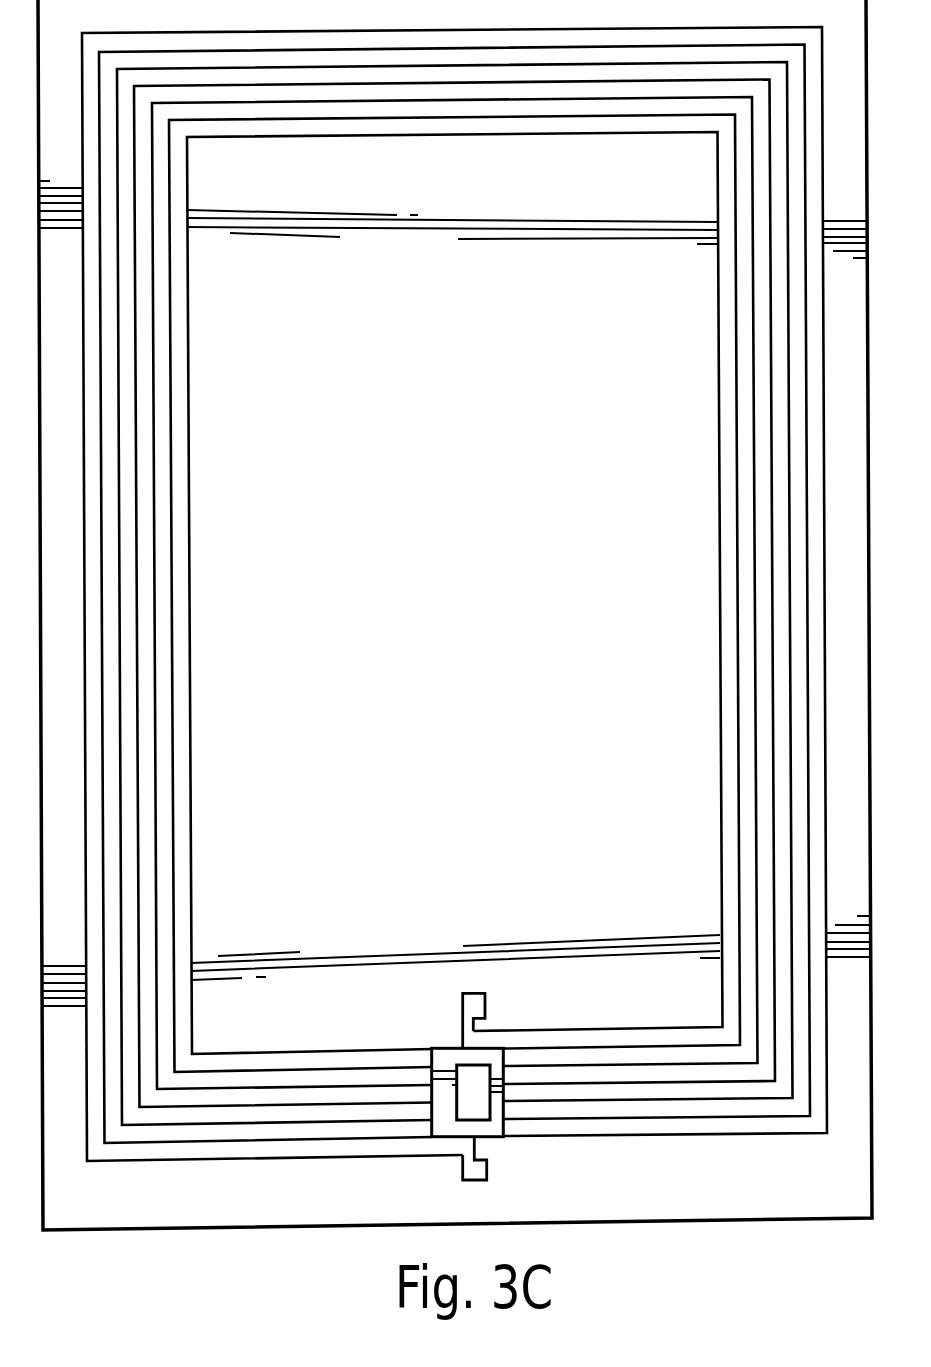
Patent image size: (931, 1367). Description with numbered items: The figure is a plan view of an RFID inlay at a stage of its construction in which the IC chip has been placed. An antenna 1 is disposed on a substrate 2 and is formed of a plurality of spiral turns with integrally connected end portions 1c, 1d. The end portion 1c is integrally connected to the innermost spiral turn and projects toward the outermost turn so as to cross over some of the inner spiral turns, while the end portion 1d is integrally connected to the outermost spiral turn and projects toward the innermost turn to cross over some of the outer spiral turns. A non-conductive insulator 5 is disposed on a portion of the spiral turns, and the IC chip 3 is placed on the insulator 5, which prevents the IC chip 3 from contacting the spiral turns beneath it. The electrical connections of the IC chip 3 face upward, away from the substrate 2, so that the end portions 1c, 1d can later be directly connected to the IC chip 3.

The antenna 1 is at (180, 380).
The end portion 1c is at (470, 1022).
The end portion 1d is at (474, 1177).
The substrate 2 is at (75, 1208).
The IC chip 3 is at (479, 1103).
The non-conductive insulator 5 is at (443, 1061).